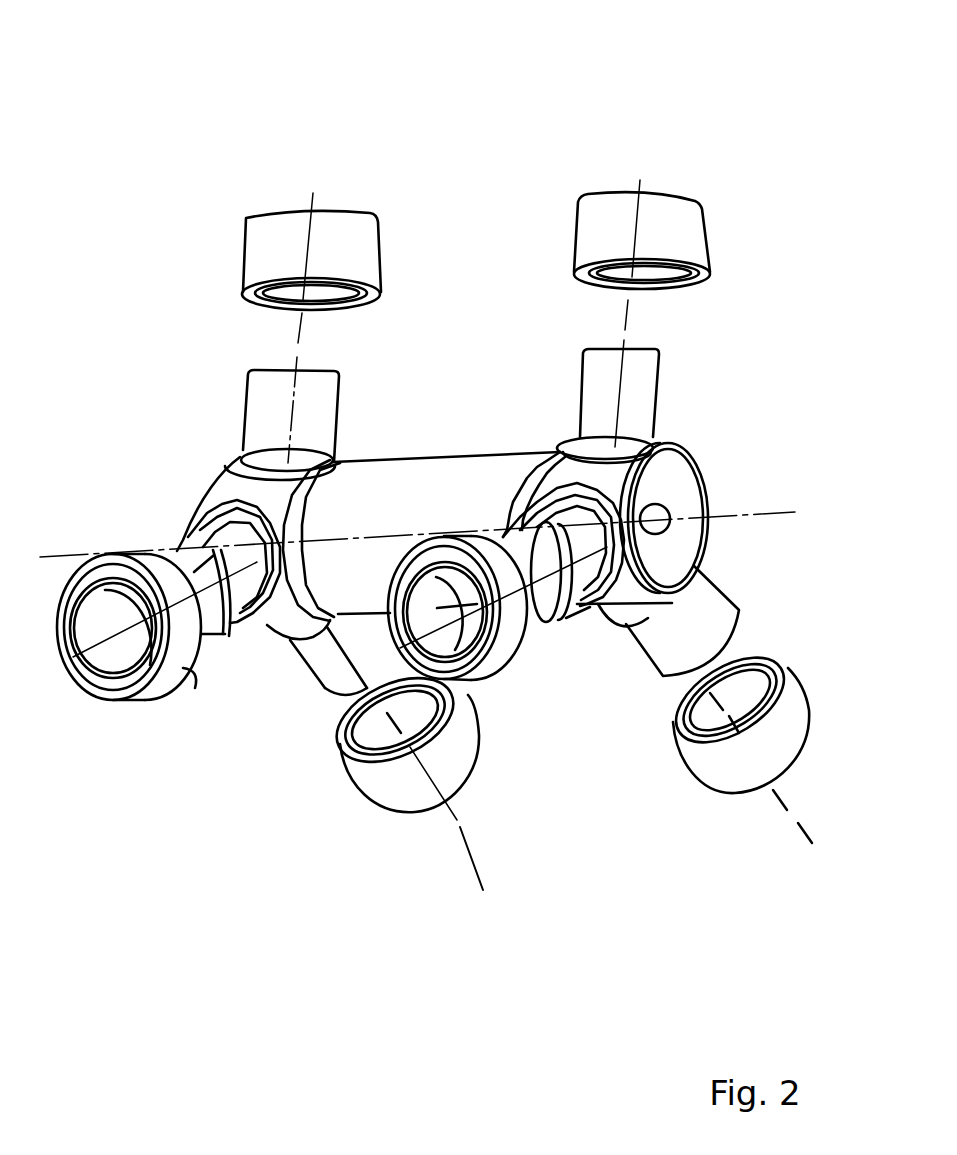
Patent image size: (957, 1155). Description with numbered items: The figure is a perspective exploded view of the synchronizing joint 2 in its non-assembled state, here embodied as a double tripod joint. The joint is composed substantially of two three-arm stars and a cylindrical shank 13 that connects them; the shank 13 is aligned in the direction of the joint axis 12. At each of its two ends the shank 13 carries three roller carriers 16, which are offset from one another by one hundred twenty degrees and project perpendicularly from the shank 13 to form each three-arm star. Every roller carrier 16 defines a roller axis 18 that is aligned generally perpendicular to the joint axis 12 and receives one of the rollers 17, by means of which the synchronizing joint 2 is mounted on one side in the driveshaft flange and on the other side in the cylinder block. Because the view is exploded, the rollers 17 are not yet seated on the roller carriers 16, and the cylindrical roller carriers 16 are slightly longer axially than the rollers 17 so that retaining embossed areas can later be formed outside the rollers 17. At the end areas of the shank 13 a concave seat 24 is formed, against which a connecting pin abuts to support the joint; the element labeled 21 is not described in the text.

The synchronizing joint 2 is at (476, 168).
The joint axis 12 is at (737, 515).
The shank 13 is at (380, 483).
The roller carriers 16 is at (268, 408).
The rollers 17 is at (272, 248).
The roller axis 18 is at (298, 332).
The bore / passage 21 is at (650, 550).
The concave seat 24 is at (672, 485).